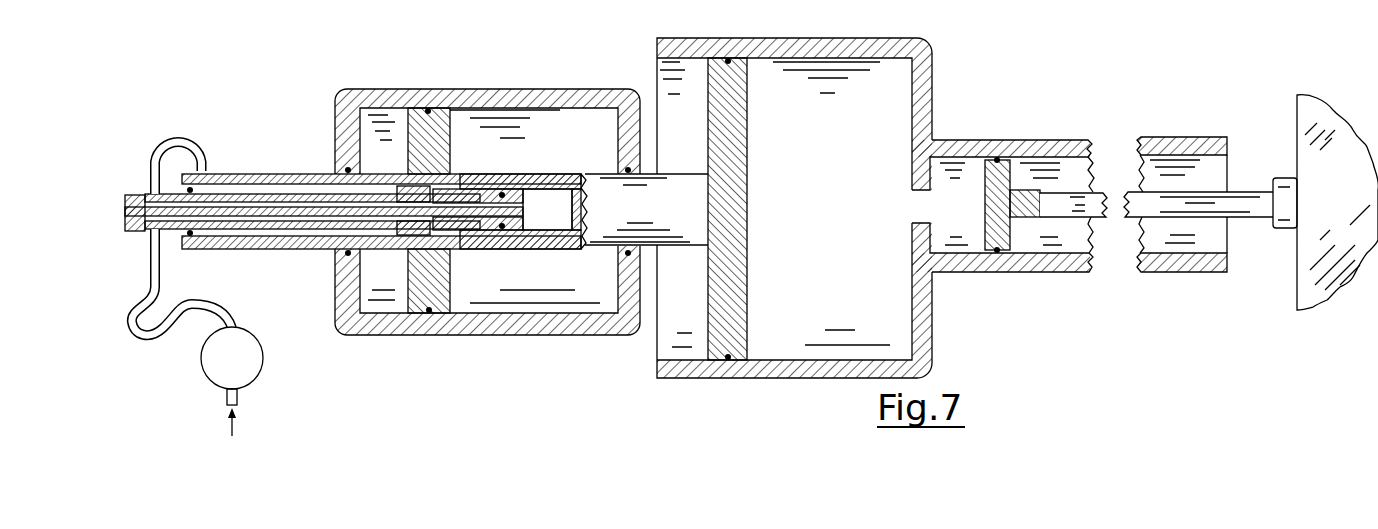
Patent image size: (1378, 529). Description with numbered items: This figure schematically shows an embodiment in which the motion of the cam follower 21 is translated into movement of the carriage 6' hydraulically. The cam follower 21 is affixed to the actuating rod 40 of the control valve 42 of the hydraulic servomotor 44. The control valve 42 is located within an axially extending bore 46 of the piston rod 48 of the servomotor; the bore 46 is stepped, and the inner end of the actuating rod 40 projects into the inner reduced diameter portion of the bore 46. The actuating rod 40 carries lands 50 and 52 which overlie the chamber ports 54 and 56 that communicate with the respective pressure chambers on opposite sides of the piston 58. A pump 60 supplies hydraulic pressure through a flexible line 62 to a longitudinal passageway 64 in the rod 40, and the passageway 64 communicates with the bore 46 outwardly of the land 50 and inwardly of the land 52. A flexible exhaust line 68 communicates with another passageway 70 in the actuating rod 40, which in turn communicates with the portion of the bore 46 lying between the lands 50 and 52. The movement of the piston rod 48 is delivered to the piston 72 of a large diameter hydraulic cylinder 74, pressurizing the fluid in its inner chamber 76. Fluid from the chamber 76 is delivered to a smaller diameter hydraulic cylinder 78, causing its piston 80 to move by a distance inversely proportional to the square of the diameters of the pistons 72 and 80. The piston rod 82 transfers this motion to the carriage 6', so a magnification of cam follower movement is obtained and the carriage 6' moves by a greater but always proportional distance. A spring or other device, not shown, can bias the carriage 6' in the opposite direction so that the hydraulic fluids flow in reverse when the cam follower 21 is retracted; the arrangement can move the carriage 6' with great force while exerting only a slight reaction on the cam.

The cam follower 21 is at (132, 194).
The actuating rod 40 is at (258, 194).
The control valve 42 is at (433, 172).
The hydraulic servomotor 44 is at (575, 88).
The axially extending bore 46 is at (272, 249).
The piston rod 48 is at (690, 172).
The land 50 is at (400, 182).
The land 52 is at (458, 188).
The chamber port 54 is at (398, 248).
The chamber port 56 is at (456, 248).
The piston 58 is at (463, 122).
The pump 60 is at (218, 386).
The flexible line 62 is at (142, 343).
The longitudinal passageway 64 is at (228, 222).
The flexible exhaust line 68 is at (175, 136).
The passageway 70 is at (315, 204).
The piston 72 is at (748, 237).
The large diameter hydraulic cylinder 74 is at (783, 37).
The inner chamber 76 is at (835, 201).
The smaller diameter hydraulic cylinder 78 is at (1037, 140).
The piston 80 is at (985, 212).
The piston rod 82 is at (1267, 164).
The carriage 6' is at (1306, 202).